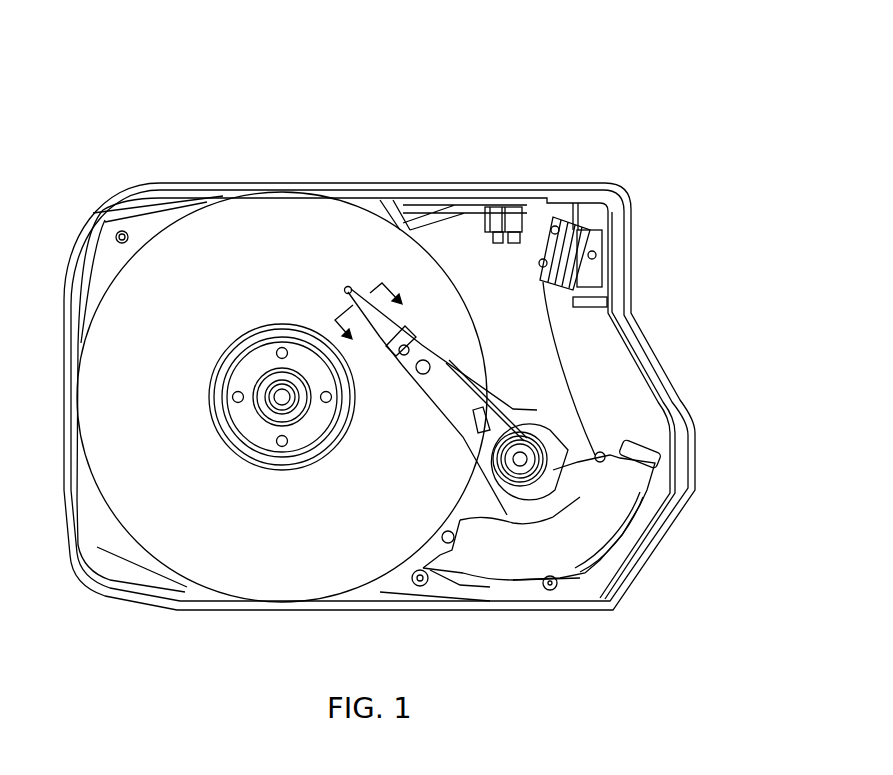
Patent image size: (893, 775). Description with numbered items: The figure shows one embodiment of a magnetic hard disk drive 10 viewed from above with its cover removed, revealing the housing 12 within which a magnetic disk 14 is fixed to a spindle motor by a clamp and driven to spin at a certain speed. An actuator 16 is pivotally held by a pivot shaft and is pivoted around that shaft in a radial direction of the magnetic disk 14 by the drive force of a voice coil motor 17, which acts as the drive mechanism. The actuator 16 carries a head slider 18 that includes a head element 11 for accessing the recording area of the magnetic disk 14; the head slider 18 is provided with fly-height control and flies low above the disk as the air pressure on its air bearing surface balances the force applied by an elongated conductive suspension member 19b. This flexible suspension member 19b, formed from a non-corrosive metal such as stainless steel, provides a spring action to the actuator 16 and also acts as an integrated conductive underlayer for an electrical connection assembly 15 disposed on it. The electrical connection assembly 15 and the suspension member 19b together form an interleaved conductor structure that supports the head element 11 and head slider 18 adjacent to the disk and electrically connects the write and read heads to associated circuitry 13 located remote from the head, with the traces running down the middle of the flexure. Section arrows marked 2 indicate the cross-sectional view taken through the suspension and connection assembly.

The magnetic hard disk drive 10 is at (357, 172).
The head element 11 is at (346, 286).
The housing 12 is at (627, 238).
The associated circuitry 13 is at (540, 413).
The magnetic disk 14 is at (238, 228).
The electrical connection assembly 15 is at (404, 343).
The actuator 16 is at (525, 382).
The voice coil motor 17 is at (584, 530).
The head slider 18 is at (348, 303).
The elongated conductive suspension member 19b is at (372, 352).
The section line for FIG. 2 is at (375, 323).